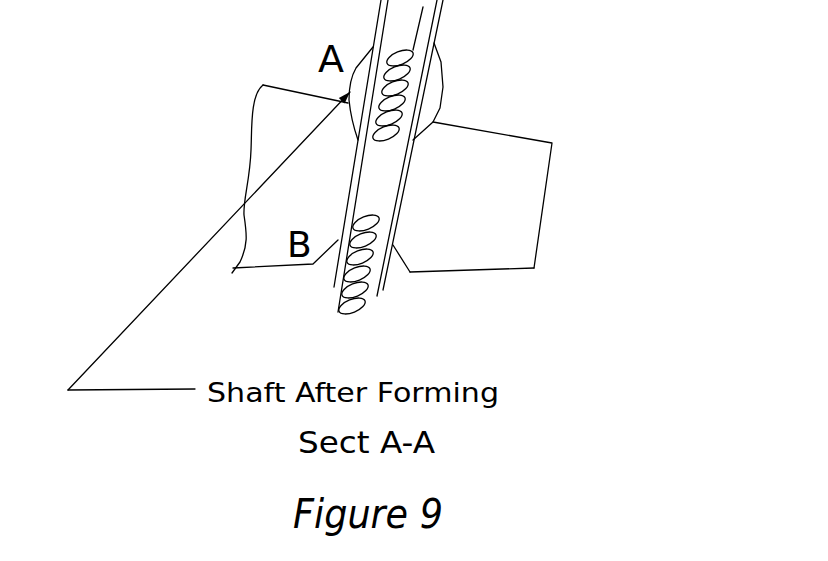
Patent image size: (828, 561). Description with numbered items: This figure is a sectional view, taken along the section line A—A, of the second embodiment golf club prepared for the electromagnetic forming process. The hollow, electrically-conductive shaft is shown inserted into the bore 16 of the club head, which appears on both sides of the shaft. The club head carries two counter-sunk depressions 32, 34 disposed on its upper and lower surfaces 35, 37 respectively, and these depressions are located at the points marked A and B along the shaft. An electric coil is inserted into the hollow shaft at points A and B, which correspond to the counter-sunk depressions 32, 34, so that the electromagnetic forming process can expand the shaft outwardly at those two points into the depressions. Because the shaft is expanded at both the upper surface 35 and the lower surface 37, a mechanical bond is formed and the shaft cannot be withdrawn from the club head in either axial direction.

The bore 16 is at (407, 184).
The counter-sunk depression 32 is at (420, 143).
The counter-sunk depression 34 is at (398, 243).
The upper surface 35 is at (523, 138).
The lower surface 37 is at (440, 272).